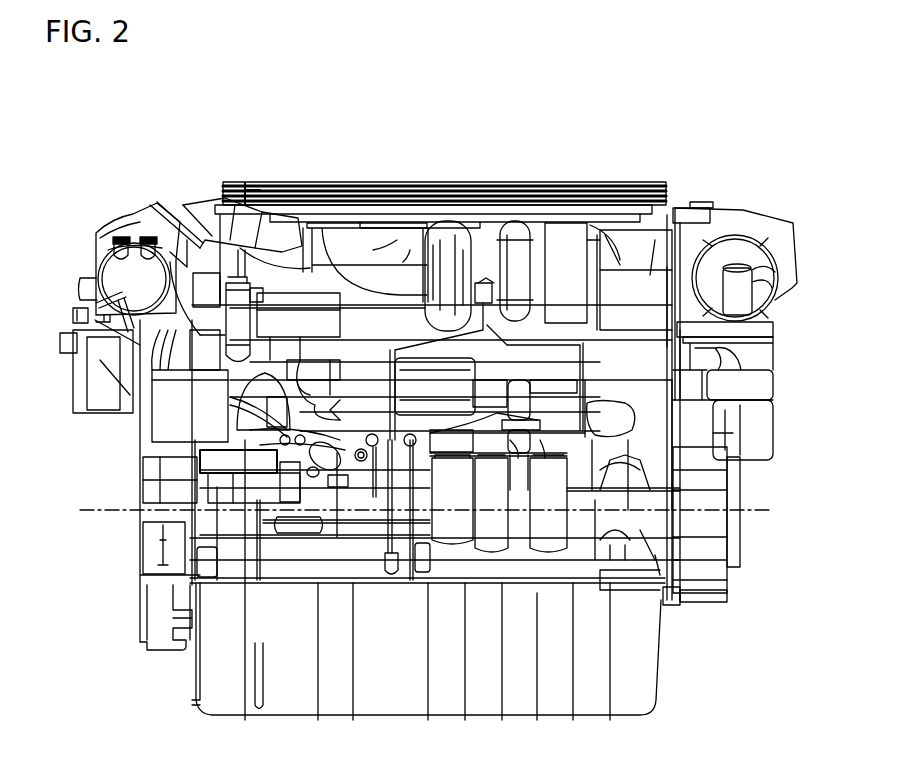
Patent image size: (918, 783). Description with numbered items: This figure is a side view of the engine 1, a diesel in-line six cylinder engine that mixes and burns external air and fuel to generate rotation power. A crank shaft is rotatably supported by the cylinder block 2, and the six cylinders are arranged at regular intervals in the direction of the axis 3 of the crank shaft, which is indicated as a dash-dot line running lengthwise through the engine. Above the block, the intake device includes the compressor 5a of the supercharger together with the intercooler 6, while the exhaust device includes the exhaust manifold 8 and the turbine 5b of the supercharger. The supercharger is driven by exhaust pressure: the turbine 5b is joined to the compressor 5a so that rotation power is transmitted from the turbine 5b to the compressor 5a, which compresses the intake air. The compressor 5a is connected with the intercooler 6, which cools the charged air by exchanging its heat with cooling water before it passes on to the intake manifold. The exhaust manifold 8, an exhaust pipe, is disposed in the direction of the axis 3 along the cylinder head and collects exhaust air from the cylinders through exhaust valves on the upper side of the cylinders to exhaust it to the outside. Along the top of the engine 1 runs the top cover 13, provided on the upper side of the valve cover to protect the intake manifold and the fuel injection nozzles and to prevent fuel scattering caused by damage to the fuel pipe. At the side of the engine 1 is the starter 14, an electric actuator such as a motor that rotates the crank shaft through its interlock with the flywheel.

The engine 1 is at (57, 107).
The cylinder block 2 is at (610, 598).
The axis of the crank shaft 3 is at (92, 512).
The compressor 5a is at (511, 228).
The turbine 5b is at (448, 220).
The intercooler 6 is at (134, 220).
The exhaust manifold 8 is at (633, 305).
The top cover 13 is at (364, 184).
The starter 14 is at (138, 470).